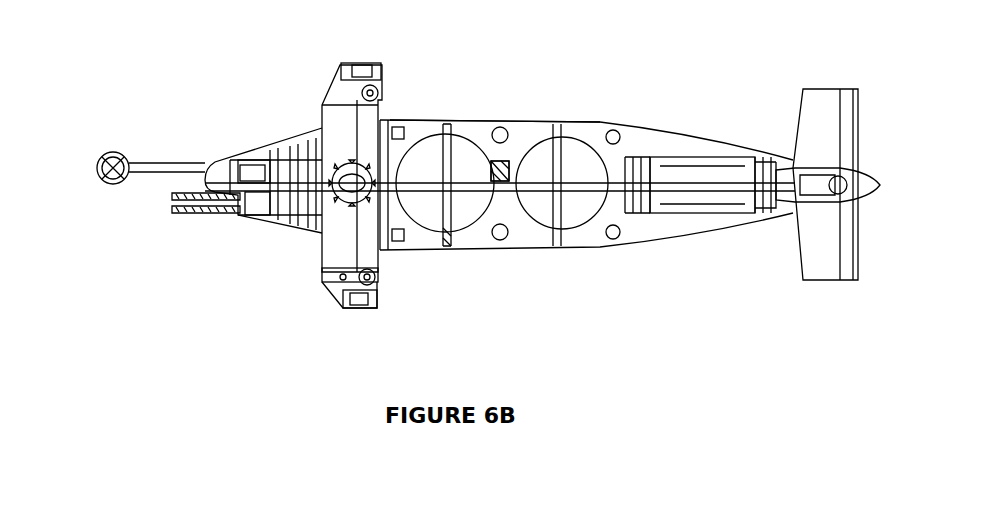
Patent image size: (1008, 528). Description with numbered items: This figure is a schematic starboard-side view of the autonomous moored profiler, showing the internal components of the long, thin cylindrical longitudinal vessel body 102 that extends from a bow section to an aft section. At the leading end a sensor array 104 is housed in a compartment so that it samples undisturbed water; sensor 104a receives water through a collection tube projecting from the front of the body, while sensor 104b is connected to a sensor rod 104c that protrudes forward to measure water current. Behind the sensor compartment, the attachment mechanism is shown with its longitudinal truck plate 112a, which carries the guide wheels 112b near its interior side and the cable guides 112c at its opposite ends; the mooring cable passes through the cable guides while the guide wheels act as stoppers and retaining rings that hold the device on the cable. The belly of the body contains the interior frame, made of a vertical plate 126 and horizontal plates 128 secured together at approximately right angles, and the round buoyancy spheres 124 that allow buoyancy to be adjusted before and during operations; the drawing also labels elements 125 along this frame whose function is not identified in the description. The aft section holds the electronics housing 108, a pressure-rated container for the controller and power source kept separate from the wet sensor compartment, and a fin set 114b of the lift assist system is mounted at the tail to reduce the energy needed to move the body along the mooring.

The longitudinal vessel body 102 is at (602, 106).
The sensor array 104 is at (158, 190).
The sensor 104a is at (255, 213).
The sensor 104b is at (257, 166).
The front sensor 104c is at (122, 158).
The electronics housing 108 is at (730, 206).
The longitudinal truck plate 112a is at (333, 222).
The guide wheels 112b is at (378, 282).
The cable guides 112c is at (356, 298).
The fin set 114b is at (798, 121).
The buoyancy spheres 124 is at (475, 212).
The fastener 125 is at (645, 170).
The vertical plate 126 is at (473, 122).
The horizontal plate 128 is at (492, 186).